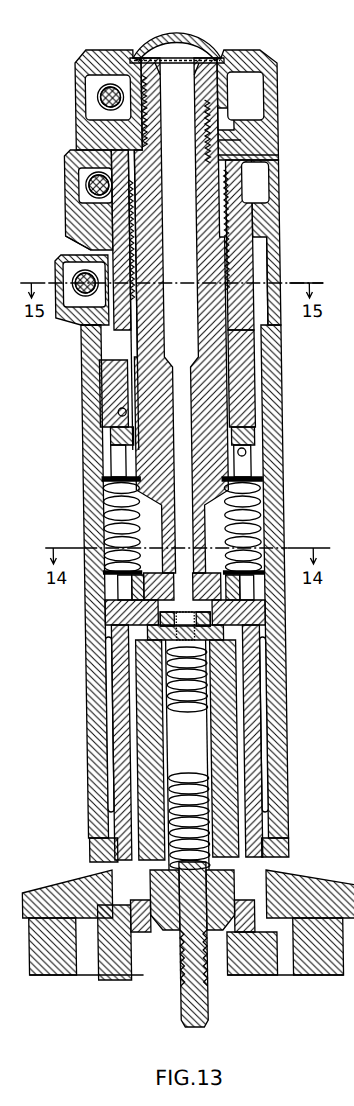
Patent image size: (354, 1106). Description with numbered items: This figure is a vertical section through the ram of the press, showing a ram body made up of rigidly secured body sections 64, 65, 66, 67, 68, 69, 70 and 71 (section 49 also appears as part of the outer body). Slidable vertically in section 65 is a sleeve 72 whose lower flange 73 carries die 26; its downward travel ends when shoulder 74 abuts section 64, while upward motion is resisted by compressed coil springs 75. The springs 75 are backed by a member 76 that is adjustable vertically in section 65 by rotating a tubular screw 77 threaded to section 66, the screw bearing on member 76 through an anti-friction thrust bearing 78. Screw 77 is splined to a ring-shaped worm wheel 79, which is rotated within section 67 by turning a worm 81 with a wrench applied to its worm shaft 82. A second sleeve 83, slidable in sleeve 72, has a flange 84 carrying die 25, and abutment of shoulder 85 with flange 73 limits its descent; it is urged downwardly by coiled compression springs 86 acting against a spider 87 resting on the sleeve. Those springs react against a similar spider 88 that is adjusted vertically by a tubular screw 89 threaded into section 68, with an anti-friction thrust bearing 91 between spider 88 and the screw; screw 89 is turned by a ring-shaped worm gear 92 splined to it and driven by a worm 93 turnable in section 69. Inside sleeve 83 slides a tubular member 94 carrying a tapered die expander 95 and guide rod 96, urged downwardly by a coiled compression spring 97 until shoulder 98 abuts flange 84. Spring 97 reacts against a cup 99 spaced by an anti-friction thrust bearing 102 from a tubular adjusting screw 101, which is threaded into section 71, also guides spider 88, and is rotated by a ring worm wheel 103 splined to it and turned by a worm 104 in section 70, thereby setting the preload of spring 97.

The ring worm wheel 103 is at (232, 80).
The worm 104 is at (100, 93).
The body section 70 is at (258, 132).
The body section 69 is at (250, 158).
The body section 71 is at (230, 130).
The tubular screw 89 is at (215, 389).
The body section 68 is at (272, 220).
The ring-shaped worm gear 92 is at (240, 182).
The worm 93 is at (85, 185).
The body section 67 is at (80, 252).
The worm shaft 82 is at (58, 272).
The worm 81 is at (68, 262).
The ring-shaped worm wheel 79 is at (97, 313).
The tubular screw 77 is at (88, 344).
The body section 66 is at (113, 364).
The anti-friction thrust bearing 78 is at (113, 411).
The member 76 is at (107, 430).
The compressed coil springs 75 is at (100, 495).
The anti-friction thrust bearing 91 is at (228, 438).
The spider 88 is at (242, 453).
The coiled compression springs 86 is at (250, 511).
The spider 87 is at (222, 584).
The tubular adjusting screw 101 is at (196, 534).
The anti-friction thrust bearing 102 is at (200, 621).
The body section 65 is at (88, 637).
The outer tube 49 is at (279, 485).
The shoulder 74 is at (80, 818).
The body section 64 is at (90, 850).
The sleeve 72 is at (110, 673).
The sleeve 83 is at (226, 660).
The cup 99 is at (150, 732).
The coiled compression spring 97 is at (188, 770).
The tubular member 94 is at (212, 802).
The lower flange 73 is at (32, 900).
The shoulder 85 is at (250, 878).
The die 26 is at (38, 975).
The die 25 is at (92, 975).
The shoulder 98 is at (135, 935).
The flange 84 is at (238, 960).
The guide rod 96 is at (172, 1002).
The tapered die expander 95 is at (198, 975).